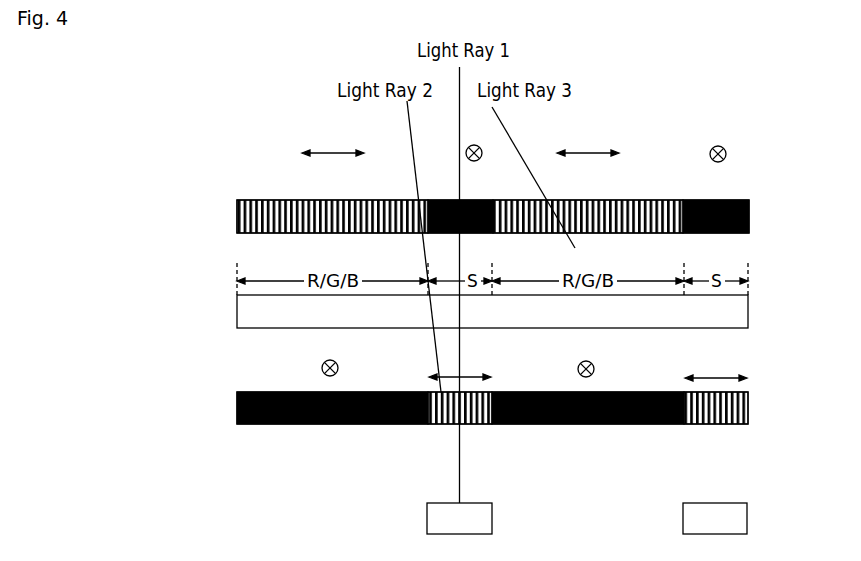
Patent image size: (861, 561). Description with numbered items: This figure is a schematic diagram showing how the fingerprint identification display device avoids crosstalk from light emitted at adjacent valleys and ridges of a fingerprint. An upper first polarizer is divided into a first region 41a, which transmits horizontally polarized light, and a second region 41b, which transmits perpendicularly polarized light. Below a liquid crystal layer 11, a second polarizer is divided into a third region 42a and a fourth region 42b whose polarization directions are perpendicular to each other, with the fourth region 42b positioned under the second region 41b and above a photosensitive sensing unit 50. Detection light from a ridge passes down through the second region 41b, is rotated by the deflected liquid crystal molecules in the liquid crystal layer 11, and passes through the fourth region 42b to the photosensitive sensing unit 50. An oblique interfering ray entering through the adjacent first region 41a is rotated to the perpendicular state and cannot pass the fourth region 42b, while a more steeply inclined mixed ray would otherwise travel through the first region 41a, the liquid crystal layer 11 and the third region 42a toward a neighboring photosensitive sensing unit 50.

The liquid crystal layer 11 is at (252, 312).
The first region 41a is at (337, 220).
The second region 41b is at (473, 203).
The third region 42a is at (315, 424).
The fourth region 42b is at (463, 413).
The photosensitive sensing unit 50 is at (587, 518).